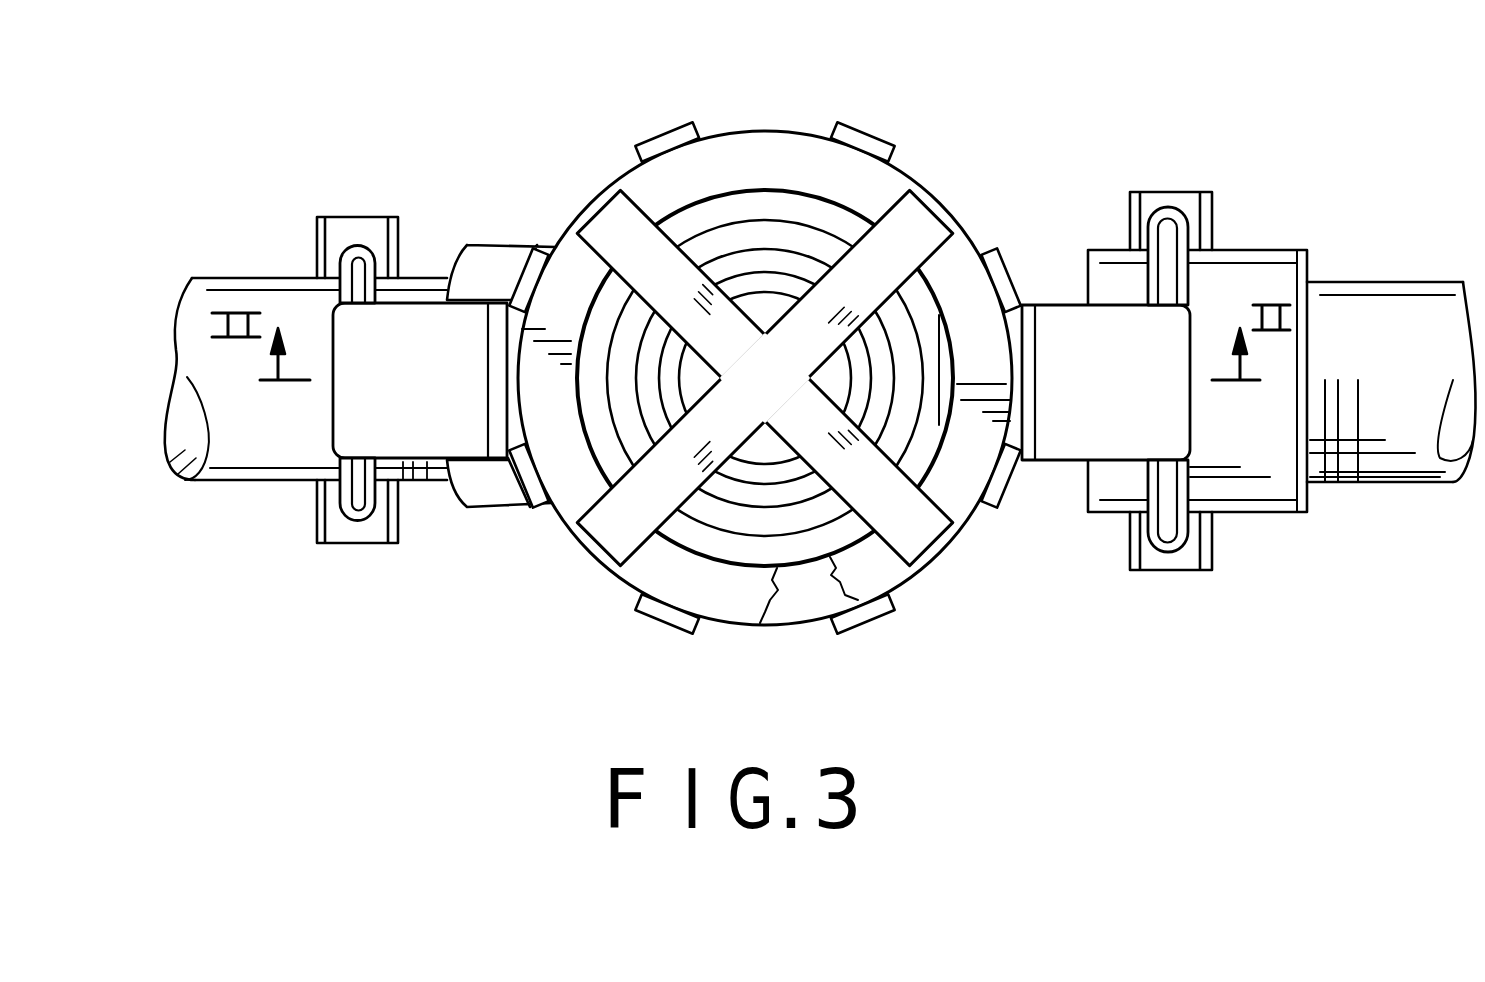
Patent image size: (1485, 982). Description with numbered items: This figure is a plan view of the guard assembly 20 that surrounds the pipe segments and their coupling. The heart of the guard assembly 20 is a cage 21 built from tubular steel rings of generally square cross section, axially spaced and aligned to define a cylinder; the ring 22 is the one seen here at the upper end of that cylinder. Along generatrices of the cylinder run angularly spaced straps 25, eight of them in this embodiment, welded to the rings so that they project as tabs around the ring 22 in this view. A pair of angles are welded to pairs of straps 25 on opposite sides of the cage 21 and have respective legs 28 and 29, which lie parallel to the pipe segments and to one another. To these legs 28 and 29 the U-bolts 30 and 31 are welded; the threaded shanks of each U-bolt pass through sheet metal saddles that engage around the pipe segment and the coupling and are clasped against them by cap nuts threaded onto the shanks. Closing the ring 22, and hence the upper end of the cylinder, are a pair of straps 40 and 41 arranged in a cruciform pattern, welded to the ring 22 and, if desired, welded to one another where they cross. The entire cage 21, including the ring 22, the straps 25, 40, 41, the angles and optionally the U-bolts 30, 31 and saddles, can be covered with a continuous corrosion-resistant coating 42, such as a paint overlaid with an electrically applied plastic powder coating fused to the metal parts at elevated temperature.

The guard assembly 20 is at (956, 542).
The cage 21 is at (660, 627).
The tubular steel ring 22 is at (772, 153).
The straps 25 is at (1008, 271).
The leg 28 is at (1073, 423).
The leg 29 is at (412, 345).
The U-bolt 30 is at (1165, 502).
The U-bolt 31 is at (357, 497).
The strap 40 is at (615, 232).
The strap 41 is at (606, 512).
The corrosion-resistant coating 42 is at (792, 593).